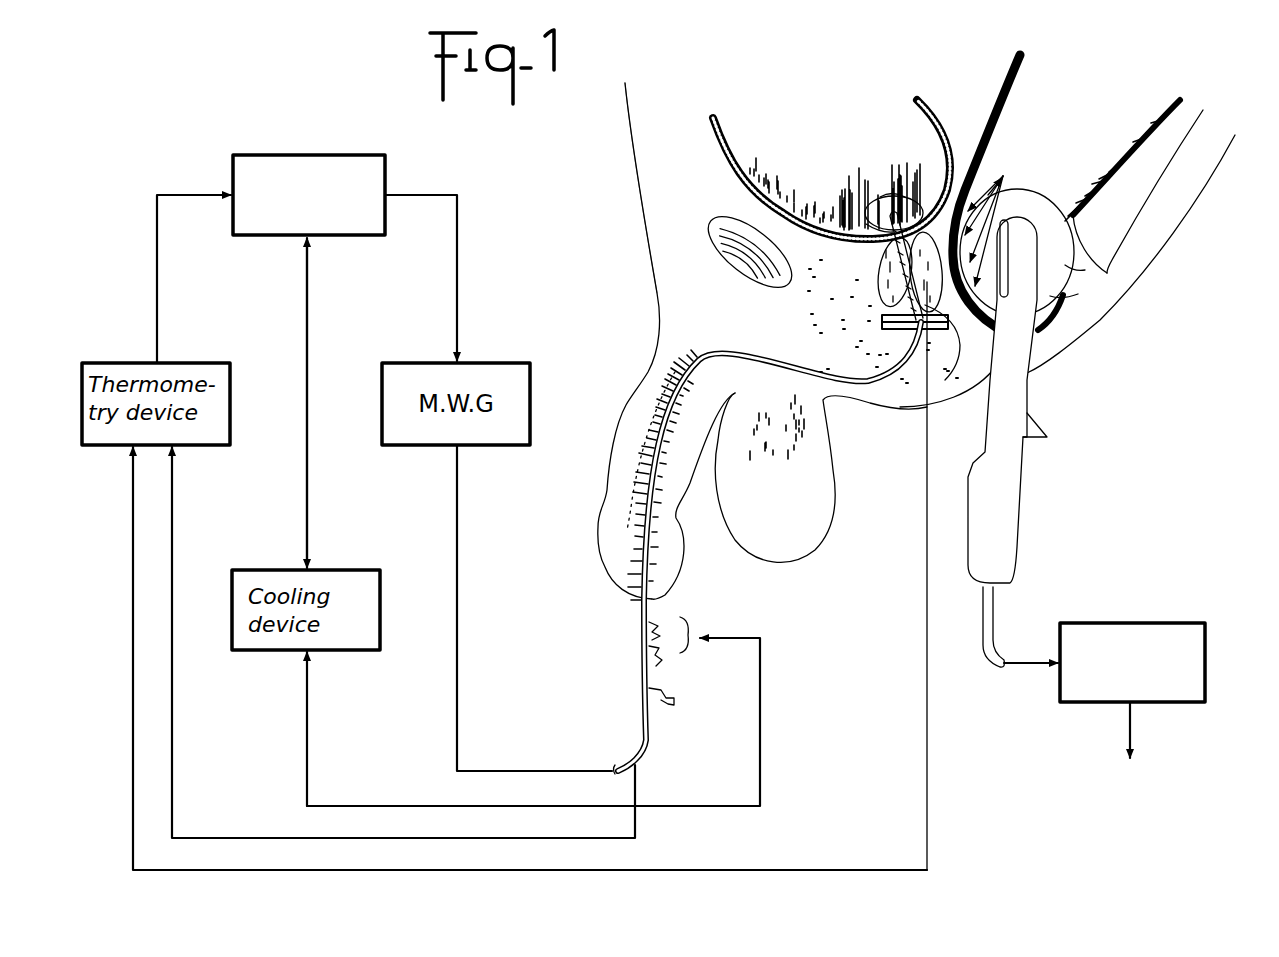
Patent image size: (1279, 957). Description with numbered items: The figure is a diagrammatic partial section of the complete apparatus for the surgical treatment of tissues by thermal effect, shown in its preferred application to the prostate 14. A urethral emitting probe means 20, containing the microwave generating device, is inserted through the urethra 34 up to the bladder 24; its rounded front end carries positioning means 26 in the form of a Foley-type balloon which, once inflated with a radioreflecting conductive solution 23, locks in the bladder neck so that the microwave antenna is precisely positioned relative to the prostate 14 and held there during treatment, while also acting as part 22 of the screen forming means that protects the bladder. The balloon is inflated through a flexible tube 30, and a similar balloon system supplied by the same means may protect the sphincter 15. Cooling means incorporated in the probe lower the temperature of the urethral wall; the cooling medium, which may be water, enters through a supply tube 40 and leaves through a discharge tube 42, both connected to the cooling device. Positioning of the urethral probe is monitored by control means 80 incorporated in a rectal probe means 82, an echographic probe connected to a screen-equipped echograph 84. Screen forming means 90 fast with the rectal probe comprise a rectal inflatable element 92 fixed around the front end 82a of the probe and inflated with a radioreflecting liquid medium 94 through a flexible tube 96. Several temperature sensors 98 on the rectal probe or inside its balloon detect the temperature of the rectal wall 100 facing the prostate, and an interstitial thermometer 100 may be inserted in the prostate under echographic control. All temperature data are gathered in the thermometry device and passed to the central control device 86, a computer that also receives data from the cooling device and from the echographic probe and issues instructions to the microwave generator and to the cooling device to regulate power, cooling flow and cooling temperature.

The prostate 14 is at (889, 280).
The sphincter 15 is at (882, 318).
The emitting probe means 20 is at (806, 352).
The part of the screen forming means 22 is at (858, 210).
The radioreflecting conductive solution 23 is at (906, 208).
The bladder 24 is at (783, 150).
The positioning means (urethral balloon) 26 is at (882, 197).
The flexible tube 30 is at (668, 702).
The urethra 34 is at (695, 357).
The supply tube 40 is at (660, 624).
The discharge tube 42 is at (664, 652).
The control means 80 is at (1013, 216).
The rectal probe means (echographic probe) 82 is at (1042, 404).
The front end of the rectal probe 82a is at (1036, 216).
The echograph 84 is at (1078, 692).
The central control device 86 is at (372, 178).
The screen forming means 90 is at (1070, 203).
The rectal inflatable element (balloon) 92 is at (1067, 302).
The radioreflecting liquid medium 94 is at (1050, 263).
The flexible tube 96 is at (1047, 430).
The temperature sensors 98 is at (999, 216).
The intersticial thermometer / rectal wall 100 is at (940, 576).